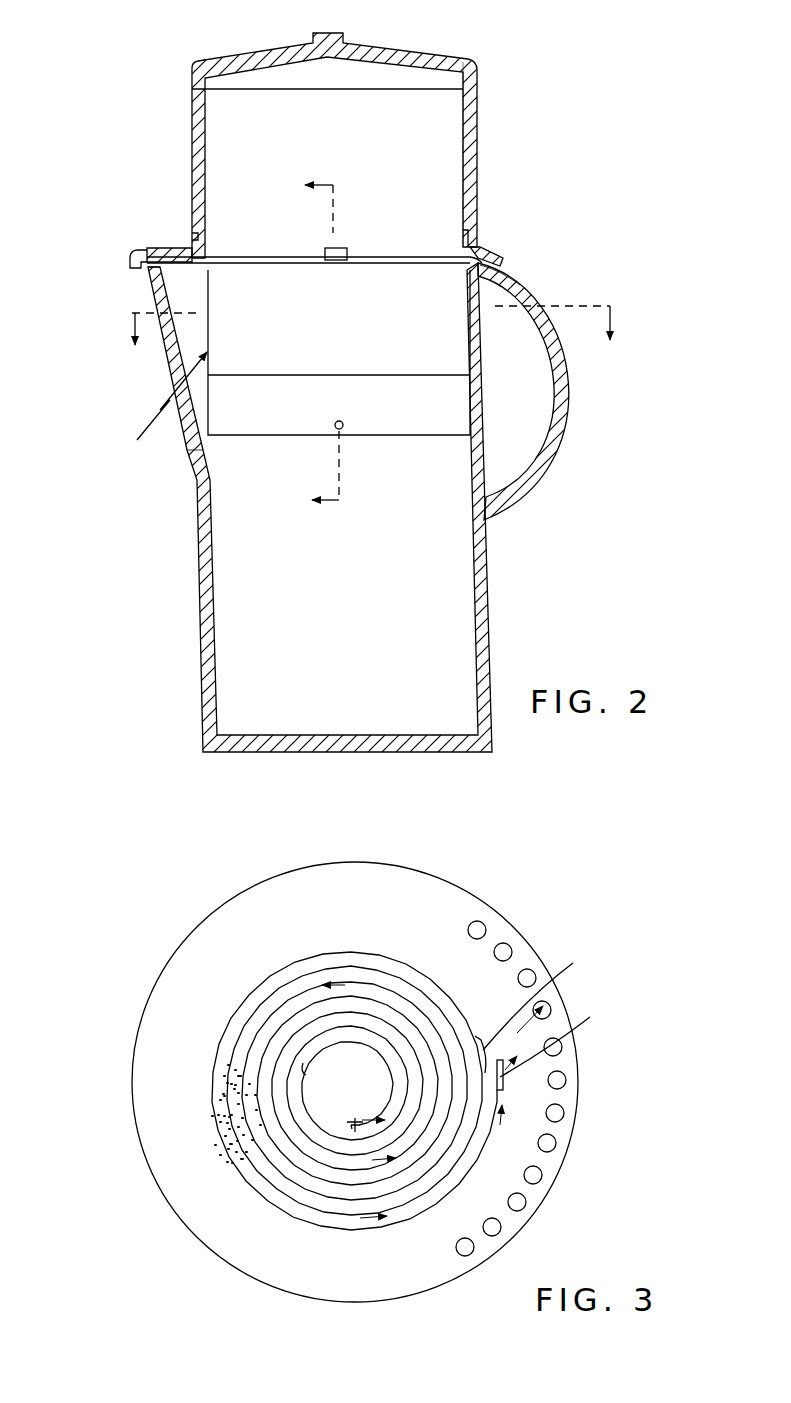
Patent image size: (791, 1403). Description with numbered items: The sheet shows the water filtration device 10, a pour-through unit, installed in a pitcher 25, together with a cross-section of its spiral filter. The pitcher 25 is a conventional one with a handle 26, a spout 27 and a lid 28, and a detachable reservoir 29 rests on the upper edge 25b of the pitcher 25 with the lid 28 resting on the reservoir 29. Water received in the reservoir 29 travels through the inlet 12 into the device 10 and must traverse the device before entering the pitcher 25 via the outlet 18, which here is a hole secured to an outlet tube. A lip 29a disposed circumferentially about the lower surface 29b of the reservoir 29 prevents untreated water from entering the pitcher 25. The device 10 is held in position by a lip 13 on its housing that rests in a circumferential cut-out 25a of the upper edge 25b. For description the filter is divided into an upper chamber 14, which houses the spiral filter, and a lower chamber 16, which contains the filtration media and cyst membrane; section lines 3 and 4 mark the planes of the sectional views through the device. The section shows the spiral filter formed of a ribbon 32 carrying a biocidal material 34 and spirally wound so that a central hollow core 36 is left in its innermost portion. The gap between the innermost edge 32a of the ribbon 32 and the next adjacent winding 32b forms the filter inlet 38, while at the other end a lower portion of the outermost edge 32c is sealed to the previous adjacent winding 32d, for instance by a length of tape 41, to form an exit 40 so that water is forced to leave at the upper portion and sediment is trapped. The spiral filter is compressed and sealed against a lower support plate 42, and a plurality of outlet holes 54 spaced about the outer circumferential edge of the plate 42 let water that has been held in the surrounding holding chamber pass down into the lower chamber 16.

In FIG. 2, the water filtration device 10 is at (156, 404).
In FIG. 2, the inlet 12 is at (327, 247).
In FIG. 2, the lip 13 is at (468, 265).
In FIG. 2, the upper chamber 14 is at (352, 333).
In FIG. 2, the lower chamber 16 is at (308, 411).
In FIG. 2, the outlet 18 is at (343, 431).
In FIG. 2, the pitcher 25 is at (200, 617).
In FIG. 2, the circumferential cut-out 25a is at (505, 280).
In FIG. 2, the upper edge 25b is at (180, 248).
In FIG. 2, the handle 26 is at (547, 472).
In FIG. 2, the spout 27 is at (150, 281).
In FIG. 2, the lid 28 is at (393, 50).
In FIG. 2, the detachable reservoir 29 is at (477, 135).
In FIG. 2, the lip 29a is at (135, 253).
In FIG. 2, the lower surface 29b is at (485, 235).
In FIG. 2, the section line 3— 3 is at (373, 341).
In FIG. 2, the section line 4— 4 is at (311, 343).
In FIG. 3, the ribbon 32 is at (289, 1190).
In FIG. 3, the innermost edge 32a is at (352, 1128).
In FIG. 3, the next adjacent winding 32b is at (304, 1070).
In FIG. 3, the outermost edge 32c is at (503, 1085).
In FIG. 3, the previous adjacent winding 32d is at (483, 1035).
In FIG. 3, the biocidal material 34 is at (229, 1145).
In FIG. 3, the central hollow core 36 is at (363, 1075).
In FIG. 3, the filter inlet 38 is at (350, 1125).
In FIG. 3, the exit 40 is at (590, 1017).
In FIG. 3, the tape 41 is at (573, 963).
In FIG. 3, the lower support plate 42 is at (398, 1282).
In FIG. 3, the outlet holes 54 is at (522, 1204).